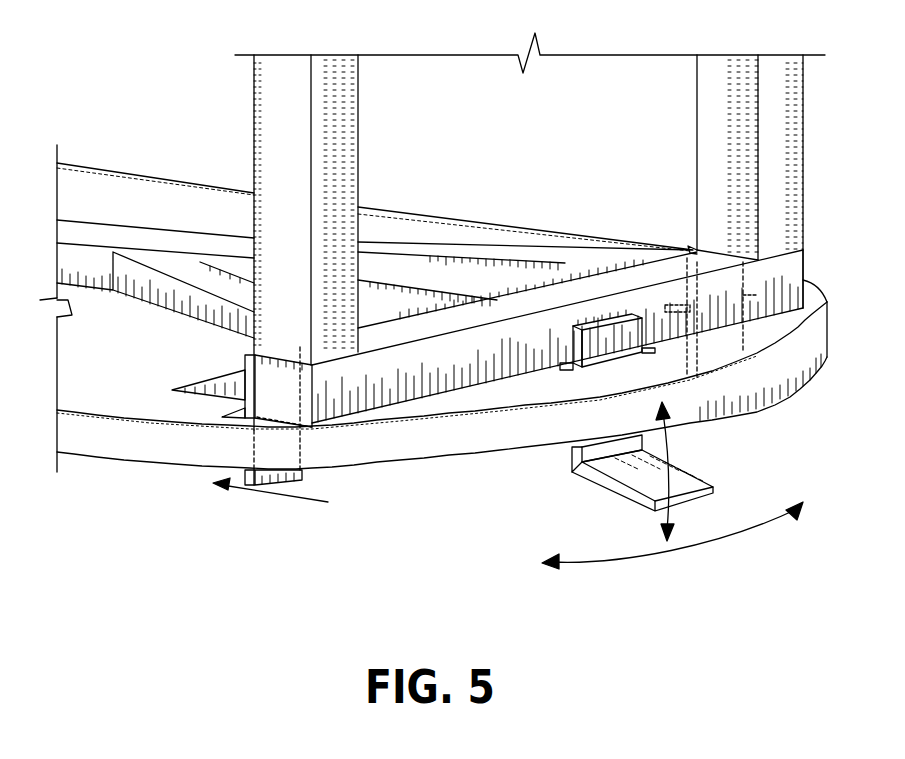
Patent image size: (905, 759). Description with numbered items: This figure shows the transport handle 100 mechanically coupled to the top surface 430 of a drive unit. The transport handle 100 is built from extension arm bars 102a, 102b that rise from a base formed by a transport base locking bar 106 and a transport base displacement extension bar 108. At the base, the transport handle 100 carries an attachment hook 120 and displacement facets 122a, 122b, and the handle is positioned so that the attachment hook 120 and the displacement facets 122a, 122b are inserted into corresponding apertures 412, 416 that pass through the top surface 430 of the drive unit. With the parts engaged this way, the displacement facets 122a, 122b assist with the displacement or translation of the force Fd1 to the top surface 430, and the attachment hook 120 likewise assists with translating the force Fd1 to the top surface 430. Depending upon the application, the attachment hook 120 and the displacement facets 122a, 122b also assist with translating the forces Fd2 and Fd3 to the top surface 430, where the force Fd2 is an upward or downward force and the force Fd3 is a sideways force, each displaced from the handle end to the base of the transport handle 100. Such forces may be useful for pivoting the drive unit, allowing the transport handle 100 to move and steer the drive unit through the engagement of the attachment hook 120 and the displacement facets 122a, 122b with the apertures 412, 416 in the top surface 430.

The transport handle 100 is at (233, 157).
The extension arm bar 102a is at (700, 62).
The extension arm bar 102b is at (256, 63).
The transport base locking bar 106 is at (538, 353).
The transport base displacement extension bar 108 is at (160, 238).
The attachment hook 120 is at (602, 478).
The displacement facet 122a is at (693, 248).
The displacement facet 122b is at (245, 370).
The aperture 412 is at (223, 417).
The aperture 416 is at (563, 365).
The top surface 430 is at (128, 447).
The force Fd1 is at (270, 497).
The force Fd2 is at (683, 471).
The force Fd3 is at (672, 547).